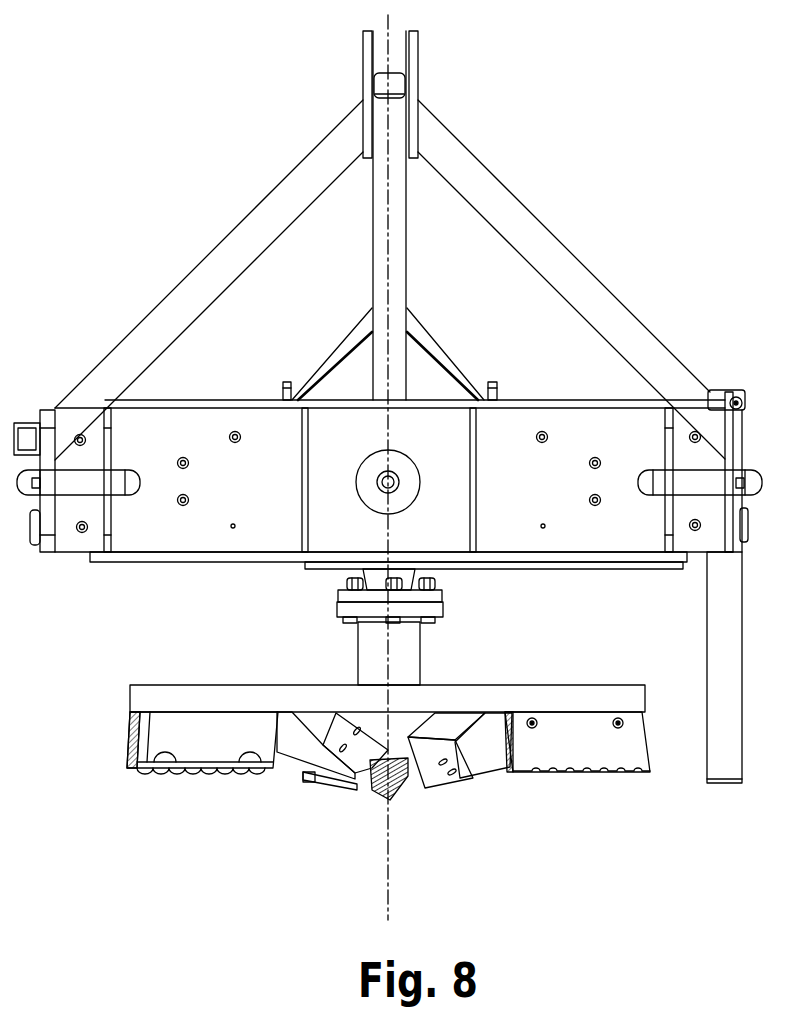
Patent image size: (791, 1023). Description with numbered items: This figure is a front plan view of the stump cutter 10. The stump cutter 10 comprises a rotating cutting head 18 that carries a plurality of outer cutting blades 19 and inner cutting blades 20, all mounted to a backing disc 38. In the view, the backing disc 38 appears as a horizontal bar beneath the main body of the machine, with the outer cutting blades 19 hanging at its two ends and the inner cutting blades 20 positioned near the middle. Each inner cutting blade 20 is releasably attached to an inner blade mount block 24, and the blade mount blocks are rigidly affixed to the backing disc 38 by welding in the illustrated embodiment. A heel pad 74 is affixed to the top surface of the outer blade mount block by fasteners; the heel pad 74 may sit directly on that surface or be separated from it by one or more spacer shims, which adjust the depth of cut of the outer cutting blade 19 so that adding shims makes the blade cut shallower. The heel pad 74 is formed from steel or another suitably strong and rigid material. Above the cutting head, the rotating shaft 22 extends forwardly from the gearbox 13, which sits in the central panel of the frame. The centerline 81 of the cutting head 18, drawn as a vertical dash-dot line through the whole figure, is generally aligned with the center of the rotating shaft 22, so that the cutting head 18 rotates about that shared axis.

The stump cutter 10 is at (590, 78).
The gearbox 13 is at (350, 453).
The rotating shaft 22 is at (385, 484).
The backing disc 38 is at (556, 690).
The rotating cutting head 18 is at (364, 746).
The outer cutting blade 19 is at (205, 777).
The heel pad 74 is at (313, 777).
The inner cutting blade 20 is at (357, 780).
The inner blade mount block 24 is at (493, 737).
The centerline 81 is at (390, 897).